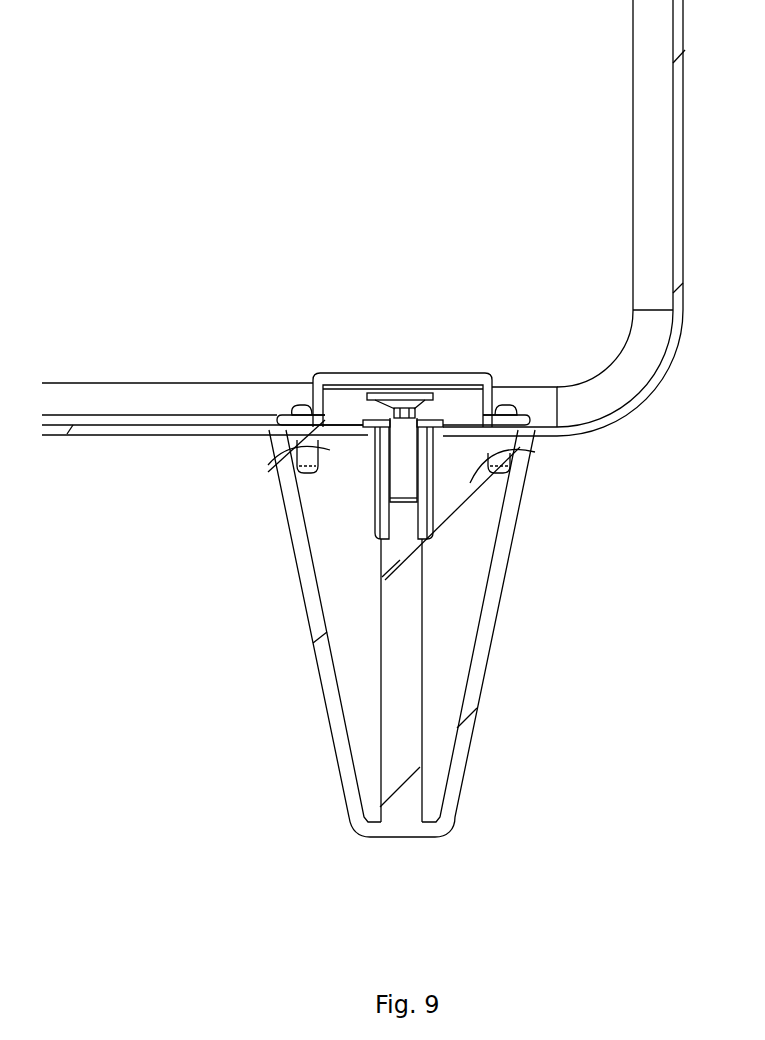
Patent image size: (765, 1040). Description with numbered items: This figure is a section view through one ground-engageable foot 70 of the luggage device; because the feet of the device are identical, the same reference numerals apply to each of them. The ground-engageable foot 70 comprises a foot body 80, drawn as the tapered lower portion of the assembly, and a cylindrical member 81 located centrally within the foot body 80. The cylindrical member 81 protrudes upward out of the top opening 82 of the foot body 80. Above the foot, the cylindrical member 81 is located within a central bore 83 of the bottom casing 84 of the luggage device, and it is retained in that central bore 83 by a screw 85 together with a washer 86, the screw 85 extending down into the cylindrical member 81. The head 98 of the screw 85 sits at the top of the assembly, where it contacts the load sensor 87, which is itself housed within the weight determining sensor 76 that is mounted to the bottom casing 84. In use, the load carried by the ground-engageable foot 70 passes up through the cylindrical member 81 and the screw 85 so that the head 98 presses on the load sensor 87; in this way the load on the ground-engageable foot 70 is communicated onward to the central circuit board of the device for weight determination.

The ground-engageable foot 70 is at (470, 735).
The weight determining sensor 76 is at (495, 376).
The foot body 80 is at (483, 648).
The cylindrical member 81 is at (410, 588).
The top opening 82 is at (513, 448).
The central bore 83 is at (380, 484).
The bottom casing 84 is at (325, 450).
The screw 85 is at (403, 437).
The washer 86 is at (459, 386).
The load sensor 87 is at (427, 392).
The head 98 is at (410, 400).